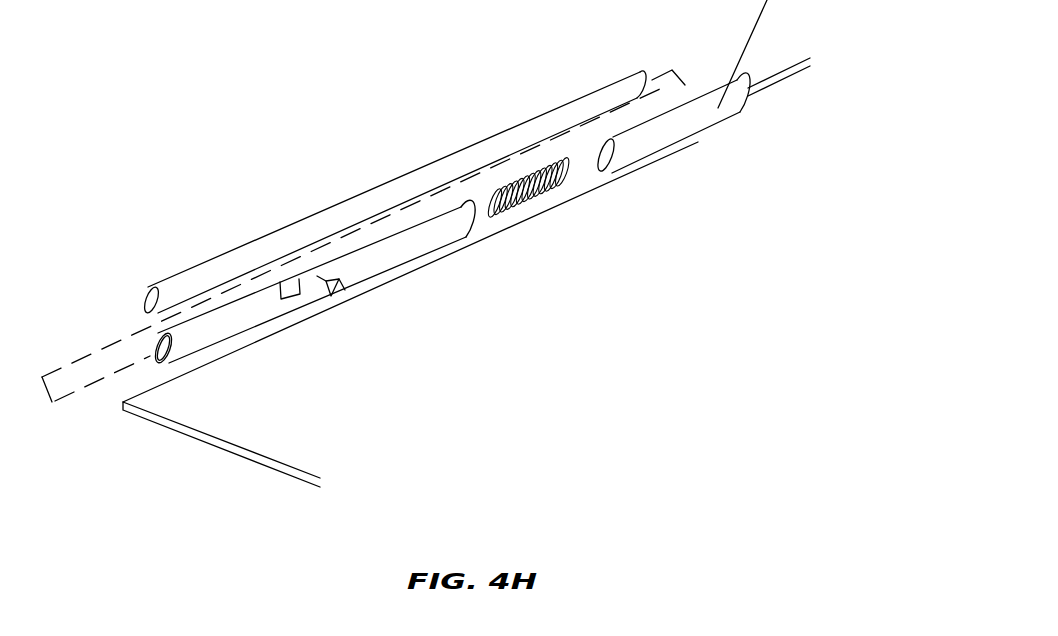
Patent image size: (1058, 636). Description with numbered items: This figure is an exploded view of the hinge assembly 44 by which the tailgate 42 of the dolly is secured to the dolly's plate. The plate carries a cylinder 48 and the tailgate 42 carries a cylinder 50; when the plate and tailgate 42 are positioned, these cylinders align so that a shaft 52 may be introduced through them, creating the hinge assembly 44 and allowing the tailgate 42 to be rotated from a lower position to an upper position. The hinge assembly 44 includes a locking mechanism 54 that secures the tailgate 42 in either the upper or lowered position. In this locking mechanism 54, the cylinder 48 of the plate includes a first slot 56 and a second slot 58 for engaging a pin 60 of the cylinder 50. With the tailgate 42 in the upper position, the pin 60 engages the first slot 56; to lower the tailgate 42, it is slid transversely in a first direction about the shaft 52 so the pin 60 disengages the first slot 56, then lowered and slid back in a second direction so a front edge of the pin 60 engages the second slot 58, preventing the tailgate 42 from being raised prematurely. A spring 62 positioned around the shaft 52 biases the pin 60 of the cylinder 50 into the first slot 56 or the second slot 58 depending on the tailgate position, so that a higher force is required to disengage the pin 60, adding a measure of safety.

The tailgate 42 is at (700, 142).
The hinge assembly 44 is at (226, 68).
The cylinder 48 is at (195, 343).
The cylinder 50 is at (332, 354).
The shaft 52 is at (243, 255).
The locking mechanism 54 is at (343, 350).
The first slot 56 is at (284, 297).
The second slot 58 is at (299, 290).
The pin 60 is at (328, 288).
The spring 62 is at (547, 193).